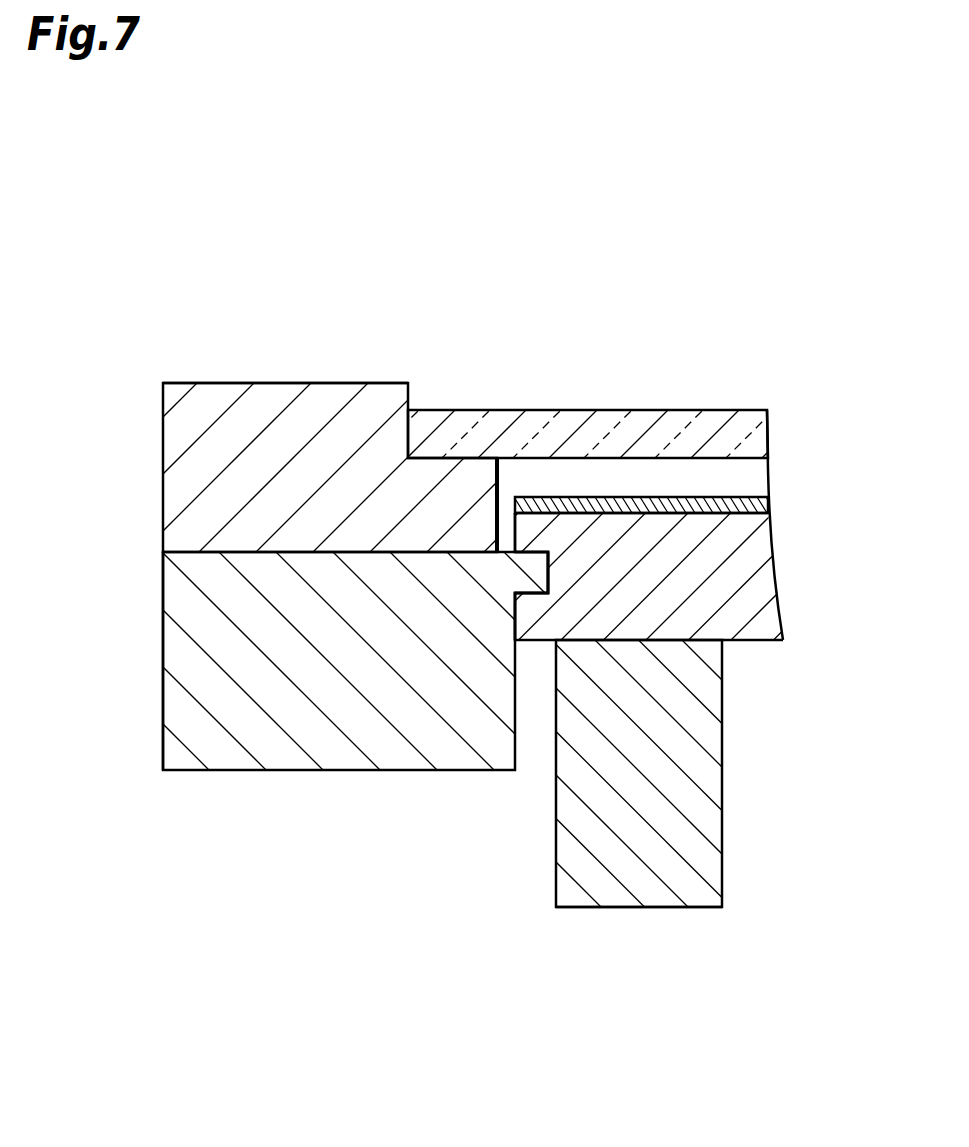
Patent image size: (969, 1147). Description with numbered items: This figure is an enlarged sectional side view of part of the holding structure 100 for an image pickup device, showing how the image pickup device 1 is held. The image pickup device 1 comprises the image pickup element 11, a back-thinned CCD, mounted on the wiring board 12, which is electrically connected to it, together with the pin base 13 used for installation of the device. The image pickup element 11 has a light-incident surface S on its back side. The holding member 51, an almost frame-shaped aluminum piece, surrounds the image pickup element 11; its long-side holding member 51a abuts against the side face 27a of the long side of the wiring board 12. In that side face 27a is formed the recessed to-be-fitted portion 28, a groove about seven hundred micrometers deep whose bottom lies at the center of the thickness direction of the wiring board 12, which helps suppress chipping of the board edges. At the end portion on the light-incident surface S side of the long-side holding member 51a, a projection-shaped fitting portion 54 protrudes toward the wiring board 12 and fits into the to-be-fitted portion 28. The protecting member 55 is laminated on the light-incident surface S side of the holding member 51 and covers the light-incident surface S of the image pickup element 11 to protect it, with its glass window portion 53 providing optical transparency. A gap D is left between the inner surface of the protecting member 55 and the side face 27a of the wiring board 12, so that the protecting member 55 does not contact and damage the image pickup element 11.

The holding structure for an image pickup device 100 is at (200, 292).
The image pickup device 1 is at (727, 866).
The image pickup element 11 is at (603, 497).
The wiring board 12 is at (755, 650).
The pin base 13 is at (664, 911).
The side face of the long side of the wiring board 27a is at (509, 518).
The to-be-fitted portion 28 is at (540, 590).
The holding member 51 is at (158, 722).
The long-side holding member 51a is at (200, 622).
The glass window portion 53 is at (557, 420).
The fitting portion 54 is at (530, 572).
The protecting member 55 is at (157, 478).
The gap D is at (495, 518).
The light-incident surface S is at (664, 497).